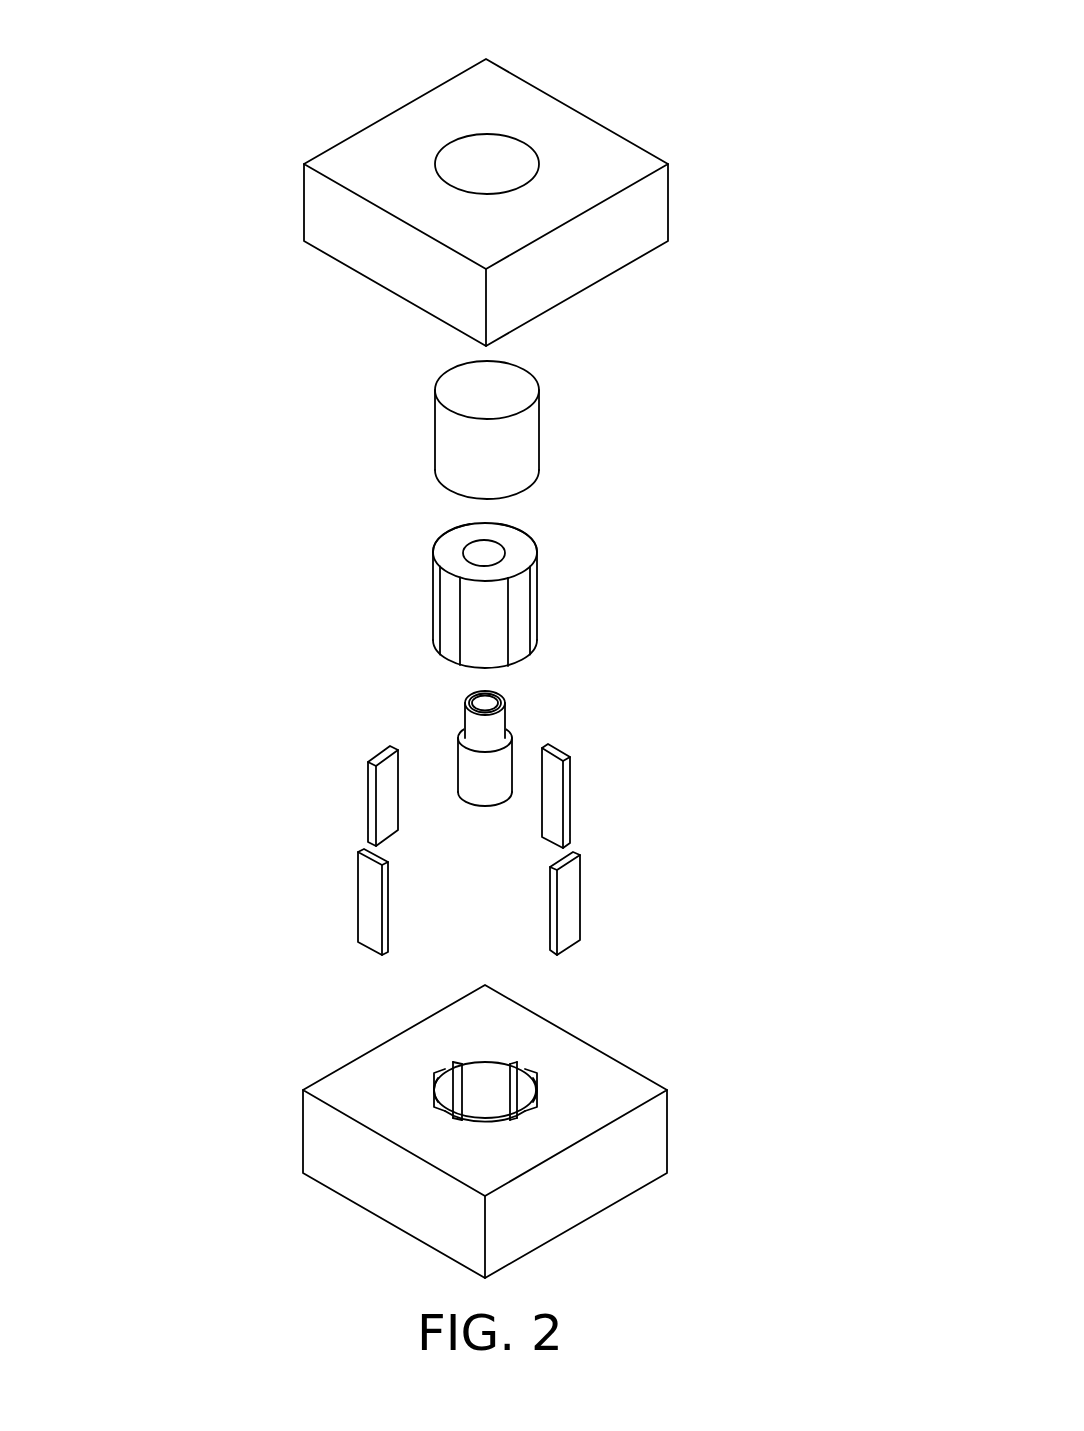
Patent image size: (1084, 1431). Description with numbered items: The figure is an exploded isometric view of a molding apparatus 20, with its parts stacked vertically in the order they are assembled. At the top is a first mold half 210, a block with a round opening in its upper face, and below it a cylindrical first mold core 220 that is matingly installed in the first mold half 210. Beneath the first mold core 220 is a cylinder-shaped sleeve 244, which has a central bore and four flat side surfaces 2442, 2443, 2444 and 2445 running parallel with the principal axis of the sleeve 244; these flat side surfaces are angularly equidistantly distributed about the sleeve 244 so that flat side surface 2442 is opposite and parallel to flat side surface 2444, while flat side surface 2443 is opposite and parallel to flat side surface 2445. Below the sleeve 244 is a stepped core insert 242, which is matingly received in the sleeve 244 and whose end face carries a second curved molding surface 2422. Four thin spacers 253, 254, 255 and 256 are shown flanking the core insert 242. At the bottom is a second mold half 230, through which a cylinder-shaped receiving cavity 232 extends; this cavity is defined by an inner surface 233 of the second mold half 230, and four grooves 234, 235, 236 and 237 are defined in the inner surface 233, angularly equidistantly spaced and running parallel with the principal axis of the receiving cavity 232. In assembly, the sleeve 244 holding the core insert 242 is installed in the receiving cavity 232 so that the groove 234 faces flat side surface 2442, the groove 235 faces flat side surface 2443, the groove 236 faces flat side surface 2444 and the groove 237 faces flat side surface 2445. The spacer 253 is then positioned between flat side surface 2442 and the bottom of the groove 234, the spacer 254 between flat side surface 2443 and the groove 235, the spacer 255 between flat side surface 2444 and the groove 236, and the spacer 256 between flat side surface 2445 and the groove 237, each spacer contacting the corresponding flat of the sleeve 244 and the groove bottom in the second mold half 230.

The molding apparatus 20 is at (467, 21).
The first mold half 210 is at (563, 156).
The first mold core 220 is at (508, 393).
The sleeve 244 is at (473, 573).
The flat side surface 2445 is at (447, 532).
The flat side surface 2444 is at (527, 527).
The flat side surface 2443 is at (522, 593).
The flat side surface 2442 is at (452, 635).
The core insert 242 is at (566, 736).
The second curved molding surface 2422 is at (490, 703).
The spacer 253 is at (365, 877).
The spacer 254 is at (570, 930).
The spacer 255 is at (567, 832).
The spacer 256 is at (382, 788).
The second mold half 230 is at (501, 1111).
The receiving cavity 232 is at (484, 1088).
The inner surface 233 is at (483, 1108).
The groove 234 is at (438, 1113).
The groove 235 is at (533, 1108).
The groove 236 is at (518, 1077).
The groove 237 is at (438, 1067).